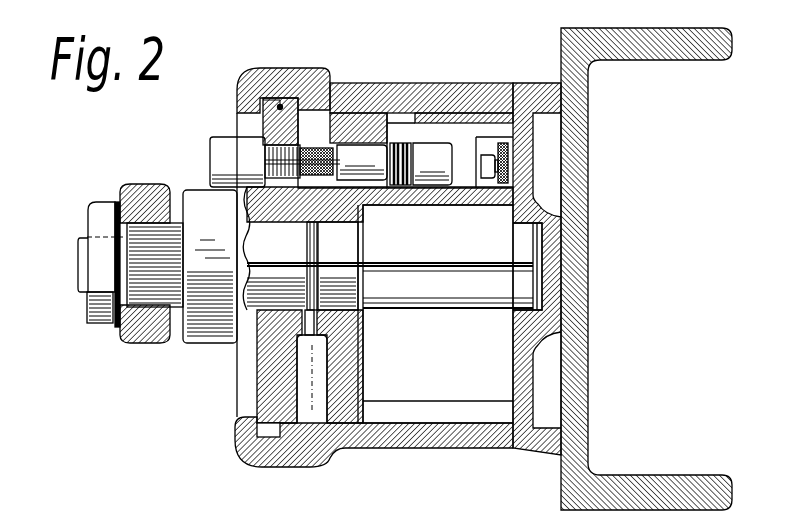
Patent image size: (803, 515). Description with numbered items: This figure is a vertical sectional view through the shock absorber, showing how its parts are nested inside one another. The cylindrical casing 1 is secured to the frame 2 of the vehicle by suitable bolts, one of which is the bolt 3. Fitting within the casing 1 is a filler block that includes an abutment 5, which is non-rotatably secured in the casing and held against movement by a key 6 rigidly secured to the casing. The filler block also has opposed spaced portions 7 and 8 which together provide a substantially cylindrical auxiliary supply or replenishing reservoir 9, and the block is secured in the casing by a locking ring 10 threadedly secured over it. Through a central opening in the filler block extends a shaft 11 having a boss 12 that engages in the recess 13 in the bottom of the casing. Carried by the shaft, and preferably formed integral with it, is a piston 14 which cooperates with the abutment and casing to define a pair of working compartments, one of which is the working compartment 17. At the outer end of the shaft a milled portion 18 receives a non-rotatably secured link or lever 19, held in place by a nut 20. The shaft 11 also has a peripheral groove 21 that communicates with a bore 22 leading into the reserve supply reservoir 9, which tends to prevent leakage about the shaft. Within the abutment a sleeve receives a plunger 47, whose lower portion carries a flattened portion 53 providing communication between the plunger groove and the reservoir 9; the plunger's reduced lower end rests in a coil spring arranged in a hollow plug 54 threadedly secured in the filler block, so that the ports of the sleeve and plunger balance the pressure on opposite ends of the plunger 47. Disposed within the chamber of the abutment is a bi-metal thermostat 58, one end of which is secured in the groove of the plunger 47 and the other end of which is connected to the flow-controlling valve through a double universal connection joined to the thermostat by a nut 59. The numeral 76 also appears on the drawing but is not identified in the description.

The cylindrical casing 1 is at (430, 85).
The frame 2 is at (581, 202).
The bolt 3 is at (513, 83).
The abutment 5 is at (377, 86).
The key 6 is at (476, 94).
The spaced portion of filler block 7 is at (347, 388).
The spaced portion of filler block 8 is at (273, 398).
The auxiliary supply or replenishing reservoir 9 is at (303, 373).
The locking ring 10 is at (270, 72).
The shaft 11 is at (338, 266).
The boss 12 is at (528, 273).
The recess 13 is at (538, 244).
The piston 14 is at (435, 314).
The working compartment 17 is at (244, 266).
The milled portion 18 is at (182, 238).
The link or lever 19 is at (153, 186).
The nut 20 is at (102, 210).
The peripheral groove 21 is at (307, 238).
The bore 22 is at (320, 325).
The plunger 47 is at (438, 153).
The flattened portion 53 is at (402, 147).
The hollow plug 54 is at (230, 141).
The bi-metal thermostat 58 is at (515, 182).
The nut 59 is at (510, 161).
The plunger 76 is at (397, 184).